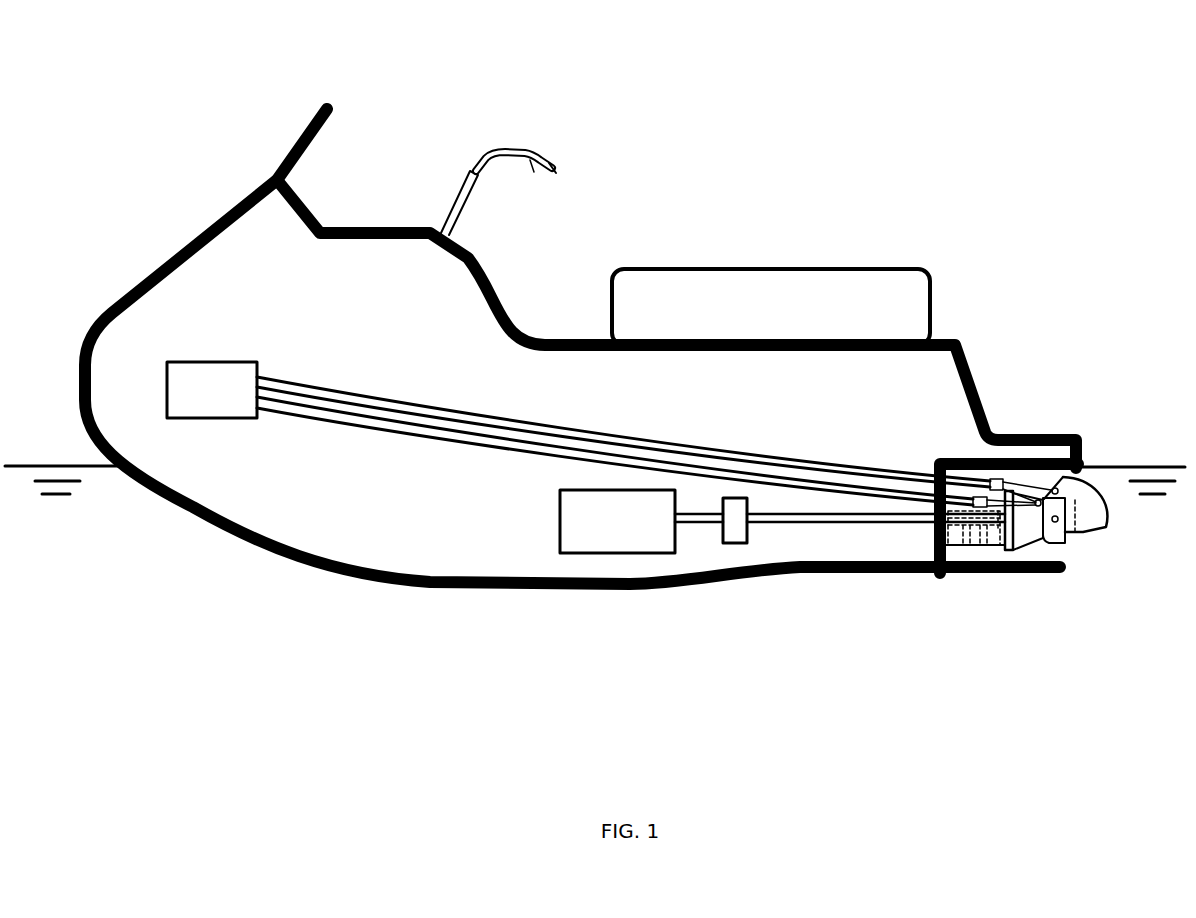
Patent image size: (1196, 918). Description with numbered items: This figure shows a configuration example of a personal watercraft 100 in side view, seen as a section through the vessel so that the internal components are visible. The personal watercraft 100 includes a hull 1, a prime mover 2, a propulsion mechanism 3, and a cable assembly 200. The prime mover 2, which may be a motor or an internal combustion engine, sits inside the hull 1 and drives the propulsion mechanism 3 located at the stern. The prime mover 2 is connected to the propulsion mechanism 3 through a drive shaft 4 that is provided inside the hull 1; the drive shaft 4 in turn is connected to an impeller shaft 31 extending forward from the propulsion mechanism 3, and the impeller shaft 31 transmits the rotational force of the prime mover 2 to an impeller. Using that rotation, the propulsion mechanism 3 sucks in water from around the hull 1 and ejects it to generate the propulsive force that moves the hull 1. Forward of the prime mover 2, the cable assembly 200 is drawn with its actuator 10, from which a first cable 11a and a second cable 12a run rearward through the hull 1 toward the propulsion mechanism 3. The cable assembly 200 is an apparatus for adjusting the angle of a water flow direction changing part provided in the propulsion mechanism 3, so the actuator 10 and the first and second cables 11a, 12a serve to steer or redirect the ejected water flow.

The personal watercraft 100 is at (791, 66).
The cable assembly 200 is at (294, 327).
The hull 1 is at (360, 573).
The prime mover 2 is at (620, 554).
The propulsion mechanism 3 is at (1098, 460).
The drive shaft 4 is at (699, 522).
The actuator 10 is at (212, 419).
The first cable 11a is at (500, 450).
The second cable 12a is at (423, 413).
The impeller shaft 31 is at (820, 524).